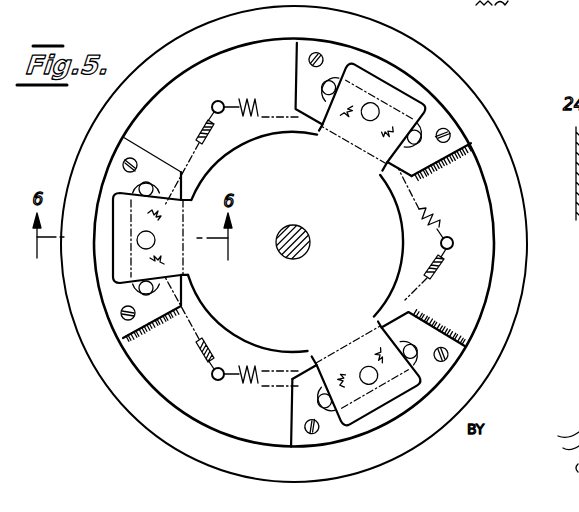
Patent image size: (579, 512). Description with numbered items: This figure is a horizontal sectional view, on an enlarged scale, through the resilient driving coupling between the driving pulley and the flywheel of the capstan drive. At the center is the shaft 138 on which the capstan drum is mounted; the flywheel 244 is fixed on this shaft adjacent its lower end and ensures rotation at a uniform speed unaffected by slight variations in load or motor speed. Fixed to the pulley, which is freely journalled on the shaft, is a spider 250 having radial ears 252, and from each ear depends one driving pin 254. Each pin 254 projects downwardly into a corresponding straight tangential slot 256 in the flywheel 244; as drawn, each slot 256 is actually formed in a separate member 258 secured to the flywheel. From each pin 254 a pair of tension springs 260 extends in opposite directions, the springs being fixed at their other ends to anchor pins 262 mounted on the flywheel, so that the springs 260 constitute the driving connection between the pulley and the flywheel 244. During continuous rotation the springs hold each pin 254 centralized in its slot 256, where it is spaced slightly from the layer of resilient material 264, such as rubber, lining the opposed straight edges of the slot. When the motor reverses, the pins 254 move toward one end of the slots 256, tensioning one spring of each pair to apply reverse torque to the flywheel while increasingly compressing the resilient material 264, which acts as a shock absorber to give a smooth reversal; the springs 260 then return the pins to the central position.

The shaft 138 is at (287, 228).
The flywheel 244 is at (517, 279).
The spider 250 is at (404, 286).
The radial ears 252 is at (112, 257).
The driving pins 254 is at (372, 102).
The tangential slot 256 is at (148, 185).
The separate member 258 is at (117, 326).
The tension springs 260 is at (257, 100).
The anchor pins 262 is at (216, 101).
The resilient material 264 is at (167, 322).